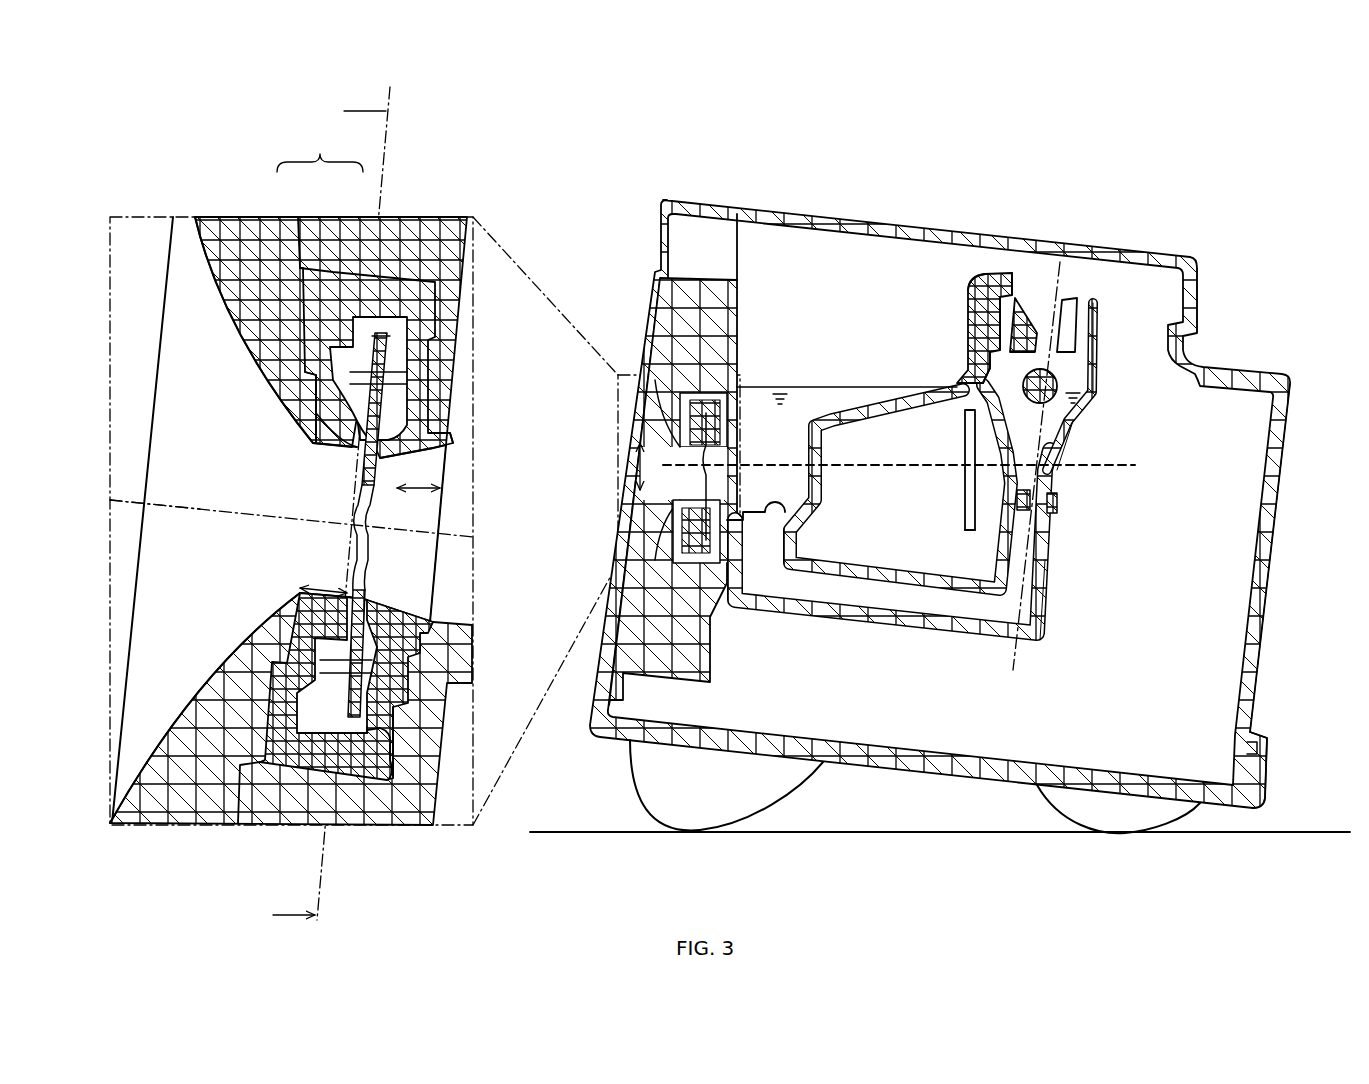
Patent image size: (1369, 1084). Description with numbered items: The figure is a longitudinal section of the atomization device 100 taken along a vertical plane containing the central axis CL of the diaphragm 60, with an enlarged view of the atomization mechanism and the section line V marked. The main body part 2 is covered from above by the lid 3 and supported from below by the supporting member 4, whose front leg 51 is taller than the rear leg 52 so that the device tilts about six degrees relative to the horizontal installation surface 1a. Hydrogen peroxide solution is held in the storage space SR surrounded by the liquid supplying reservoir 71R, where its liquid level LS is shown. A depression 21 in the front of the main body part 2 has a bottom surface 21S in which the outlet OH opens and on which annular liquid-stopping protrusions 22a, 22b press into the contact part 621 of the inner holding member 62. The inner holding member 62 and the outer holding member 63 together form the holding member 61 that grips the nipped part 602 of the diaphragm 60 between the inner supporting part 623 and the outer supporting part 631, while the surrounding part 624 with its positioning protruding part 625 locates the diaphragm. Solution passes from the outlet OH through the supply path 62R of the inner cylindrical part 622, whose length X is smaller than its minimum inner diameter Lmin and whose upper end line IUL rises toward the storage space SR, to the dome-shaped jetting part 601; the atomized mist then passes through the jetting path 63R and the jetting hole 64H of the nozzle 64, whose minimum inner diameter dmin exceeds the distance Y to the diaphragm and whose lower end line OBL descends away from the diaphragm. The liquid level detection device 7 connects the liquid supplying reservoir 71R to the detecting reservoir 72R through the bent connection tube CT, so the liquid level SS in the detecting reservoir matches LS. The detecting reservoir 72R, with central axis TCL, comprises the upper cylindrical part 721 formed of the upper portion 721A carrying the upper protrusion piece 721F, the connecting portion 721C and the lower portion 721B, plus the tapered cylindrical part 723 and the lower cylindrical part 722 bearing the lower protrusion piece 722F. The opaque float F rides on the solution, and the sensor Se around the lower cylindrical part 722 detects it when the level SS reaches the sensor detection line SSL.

The atomization device 100 is at (1224, 108).
The liquid level detection device 7 is at (987, 157).
The liquid supplying reservoir 71R is at (980, 290).
The detecting reservoir 72R is at (1030, 322).
The upper protrusion piece 721F is at (1070, 290).
The central axis of detecting reservoir TCL is at (1060, 262).
The lid 3 is at (1175, 244).
The main body part 2 is at (1258, 360).
The supporting member 4 is at (1274, 770).
The nozzle 64 is at (663, 298).
The upper cylindrical part 721 is at (860, 322).
The upper portion 721A is at (980, 298).
The connecting portion 721C is at (1000, 316).
The lower portion 721B is at (980, 376).
The liquid level LS is at (762, 387).
The storage space SR is at (802, 268).
The liquid level SS is at (1086, 380).
The float F is at (1064, 430).
The tapered cylindrical part 723 is at (1068, 453).
The sensor detection line SSL is at (1117, 462).
The lower cylindrical part 722 is at (1063, 510).
The lower protrusion piece 722F is at (1072, 520).
The inner diameter dmin is at (632, 468).
The outlet OH is at (745, 492).
The installation surface 1a is at (1318, 832).
The front leg 51 is at (715, 815).
The connection tube CT is at (840, 617).
The sensor Se is at (967, 530).
The rear leg 52 is at (1170, 812).
The holding member 61 is at (320, 147).
The outer holding member 63 is at (330, 268).
The inner holding member 62 is at (368, 272).
The diaphragm 60 is at (385, 332).
The nipped part 602 is at (388, 347).
The contact part 621 is at (410, 381).
The inner cylindrical part 622 is at (453, 430).
The upper end line IUL is at (433, 455).
The size X is at (418, 475).
The inner diameter Lmin is at (433, 550).
The supply path 62R is at (413, 568).
The inner supporting part 623 is at (378, 606).
The positioning protruding part 625 is at (373, 660).
The jetting hole 64H is at (187, 362).
The outer supporting part 631 is at (317, 462).
The jetting part 601 is at (320, 490).
The central axis CL is at (127, 500).
The jetting path 63R is at (320, 527).
The lower end line OBL is at (195, 695).
The depression 21 is at (315, 770).
The distance Y is at (323, 574).
The surrounding part 624 is at (320, 760).
The liquid-stopping protrusion 22b is at (367, 770).
The liquid-stopping protrusion 22a is at (375, 785).
The bottom surface 21S is at (390, 778).
The line V- V is at (319, 512).